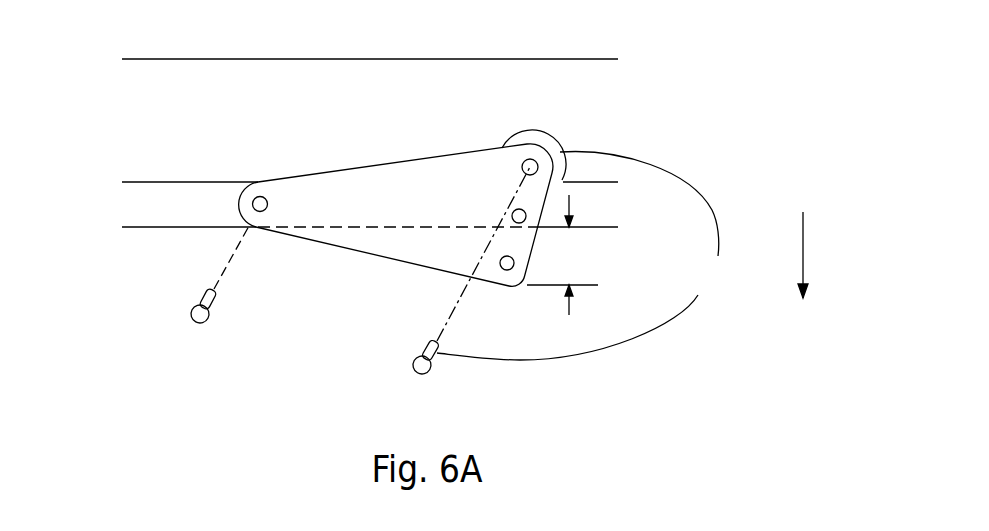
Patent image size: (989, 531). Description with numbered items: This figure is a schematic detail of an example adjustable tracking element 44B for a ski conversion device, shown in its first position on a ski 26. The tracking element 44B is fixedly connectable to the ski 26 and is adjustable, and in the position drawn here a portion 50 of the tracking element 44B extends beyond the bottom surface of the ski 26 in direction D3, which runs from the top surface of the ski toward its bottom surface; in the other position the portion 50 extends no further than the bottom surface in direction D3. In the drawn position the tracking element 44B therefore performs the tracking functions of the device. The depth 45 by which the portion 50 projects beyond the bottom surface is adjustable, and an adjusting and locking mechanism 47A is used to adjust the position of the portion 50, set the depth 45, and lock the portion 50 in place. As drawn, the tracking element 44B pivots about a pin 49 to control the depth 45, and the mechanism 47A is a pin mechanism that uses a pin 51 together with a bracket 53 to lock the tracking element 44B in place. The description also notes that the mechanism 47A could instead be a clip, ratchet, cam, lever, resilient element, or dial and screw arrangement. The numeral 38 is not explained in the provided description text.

The ski 26 is at (405, 59).
The deck / structure 38 is at (252, 115).
The tracking element 44B is at (357, 235).
The depth 45 is at (562, 255).
The adjusting and locking mechanism 47A is at (586, 256).
The pin 49 is at (192, 310).
The portion 50 is at (440, 248).
The pin 51 is at (414, 358).
The bracket 53 is at (528, 133).
The direction D3 is at (803, 242).